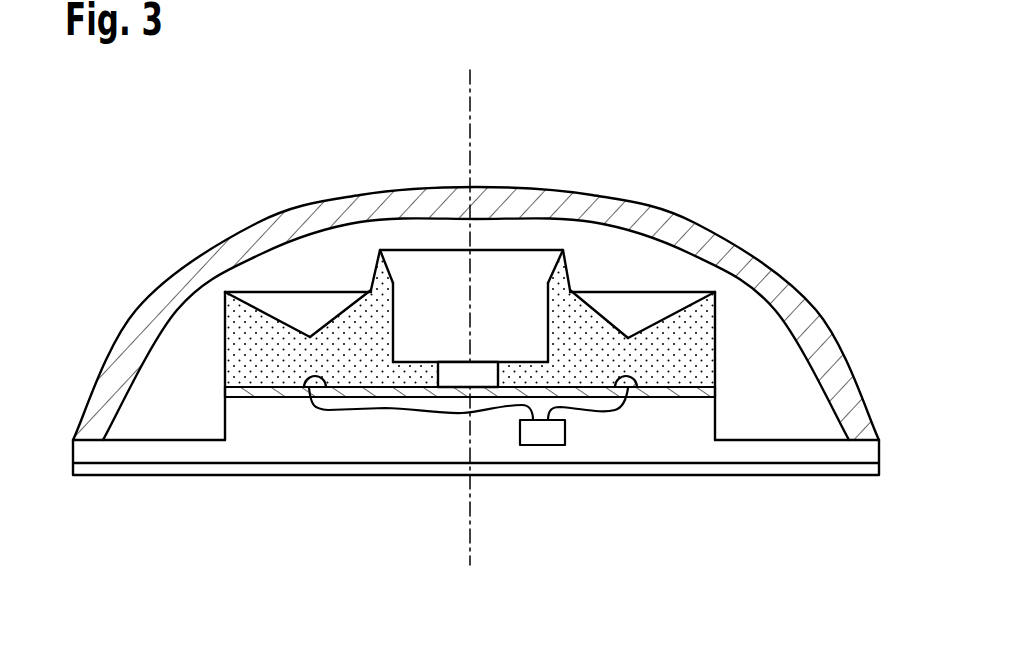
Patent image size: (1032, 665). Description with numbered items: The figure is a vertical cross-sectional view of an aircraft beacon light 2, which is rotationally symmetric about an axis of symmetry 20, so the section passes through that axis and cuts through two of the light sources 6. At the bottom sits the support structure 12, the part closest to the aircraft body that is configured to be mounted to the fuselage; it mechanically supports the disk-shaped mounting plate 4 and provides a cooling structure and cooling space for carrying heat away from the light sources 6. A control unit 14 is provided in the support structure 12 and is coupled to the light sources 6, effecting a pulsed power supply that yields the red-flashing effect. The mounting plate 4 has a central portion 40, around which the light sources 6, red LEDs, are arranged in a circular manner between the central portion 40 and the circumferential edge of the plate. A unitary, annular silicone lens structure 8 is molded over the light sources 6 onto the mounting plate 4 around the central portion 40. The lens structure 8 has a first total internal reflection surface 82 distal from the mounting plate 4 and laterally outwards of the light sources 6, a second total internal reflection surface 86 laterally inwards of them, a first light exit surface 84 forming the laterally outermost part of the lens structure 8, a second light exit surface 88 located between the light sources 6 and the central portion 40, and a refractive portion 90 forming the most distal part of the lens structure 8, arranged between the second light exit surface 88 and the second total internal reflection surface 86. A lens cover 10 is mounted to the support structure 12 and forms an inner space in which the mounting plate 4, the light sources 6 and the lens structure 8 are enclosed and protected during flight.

The aircraft beacon light 2 is at (759, 110).
The mounting plate 4 is at (378, 399).
The light sources 6 is at (309, 398).
The lens structure 8 is at (726, 370).
The lens cover 10 is at (801, 305).
The support structure 12 is at (682, 445).
The control unit 14 is at (533, 446).
The axis of symmetry 20 is at (471, 78).
The central portion 40 is at (452, 399).
The first total internal reflection surface 82 is at (271, 311).
The first light exit surface 84 is at (222, 335).
The second total internal reflection surface 86 is at (337, 311).
The second light exit surface 88 is at (412, 332).
The refractive portion 90 is at (385, 263).